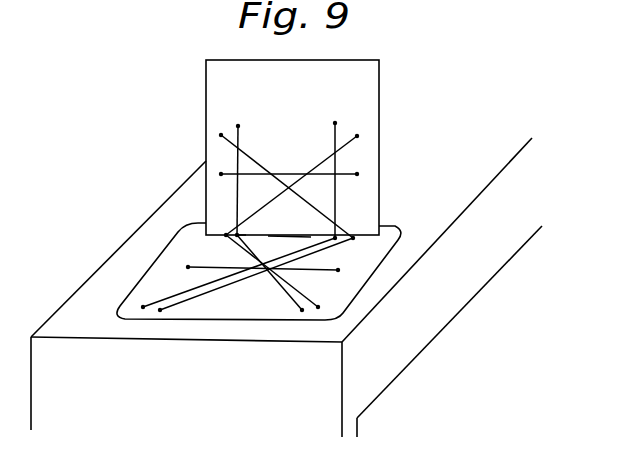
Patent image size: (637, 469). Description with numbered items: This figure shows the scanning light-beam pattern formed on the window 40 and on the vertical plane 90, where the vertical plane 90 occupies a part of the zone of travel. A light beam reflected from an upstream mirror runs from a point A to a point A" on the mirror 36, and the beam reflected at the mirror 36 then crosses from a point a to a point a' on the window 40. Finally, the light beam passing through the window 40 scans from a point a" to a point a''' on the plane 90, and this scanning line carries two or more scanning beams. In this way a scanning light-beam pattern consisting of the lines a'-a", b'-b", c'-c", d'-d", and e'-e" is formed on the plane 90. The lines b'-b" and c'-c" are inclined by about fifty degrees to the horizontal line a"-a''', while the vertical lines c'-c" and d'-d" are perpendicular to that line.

The window 40 is at (157, 273).
The vertical plane 90 is at (379, 101).
The mirror 36 is at (439, 4).